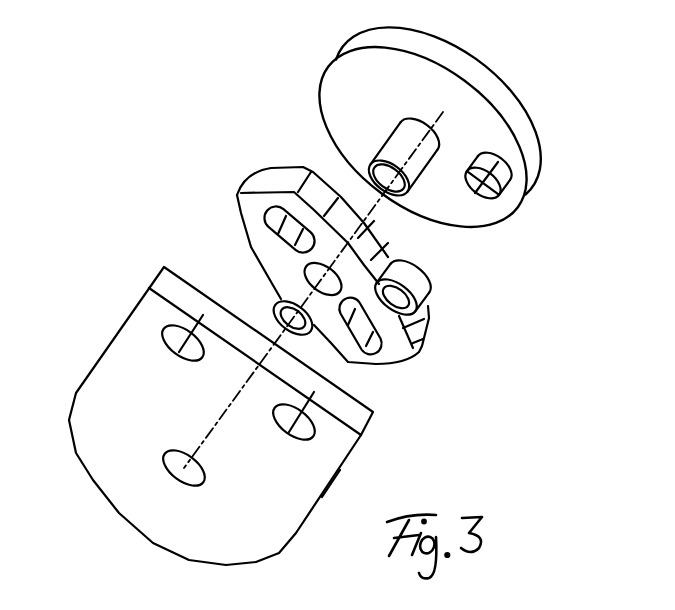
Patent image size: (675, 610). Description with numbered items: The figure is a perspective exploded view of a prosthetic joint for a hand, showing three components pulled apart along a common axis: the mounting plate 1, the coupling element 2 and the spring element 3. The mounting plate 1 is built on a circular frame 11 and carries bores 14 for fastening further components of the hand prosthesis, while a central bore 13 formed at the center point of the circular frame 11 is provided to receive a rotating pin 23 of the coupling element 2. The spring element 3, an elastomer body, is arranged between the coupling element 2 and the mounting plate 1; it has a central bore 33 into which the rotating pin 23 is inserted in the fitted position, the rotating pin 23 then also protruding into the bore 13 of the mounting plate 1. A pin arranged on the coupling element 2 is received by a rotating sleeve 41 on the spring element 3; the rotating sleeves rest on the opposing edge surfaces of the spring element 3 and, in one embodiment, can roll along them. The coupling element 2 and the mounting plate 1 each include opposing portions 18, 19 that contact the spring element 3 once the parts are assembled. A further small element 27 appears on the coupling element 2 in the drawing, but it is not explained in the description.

The mounting plate 1 is at (276, 536).
The coupling element 2 is at (457, 62).
The spring element 3 is at (248, 200).
The circular frame 11 is at (338, 482).
The central bore 13 is at (165, 468).
The bores 14 is at (170, 340).
The opposing portion 18 is at (354, 394).
The opposing portion 19 is at (493, 204).
The rotating pin 23 is at (386, 150).
The pin 27 is at (505, 181).
The central bore 33 is at (303, 276).
The rotating sleeve 41 is at (283, 305).